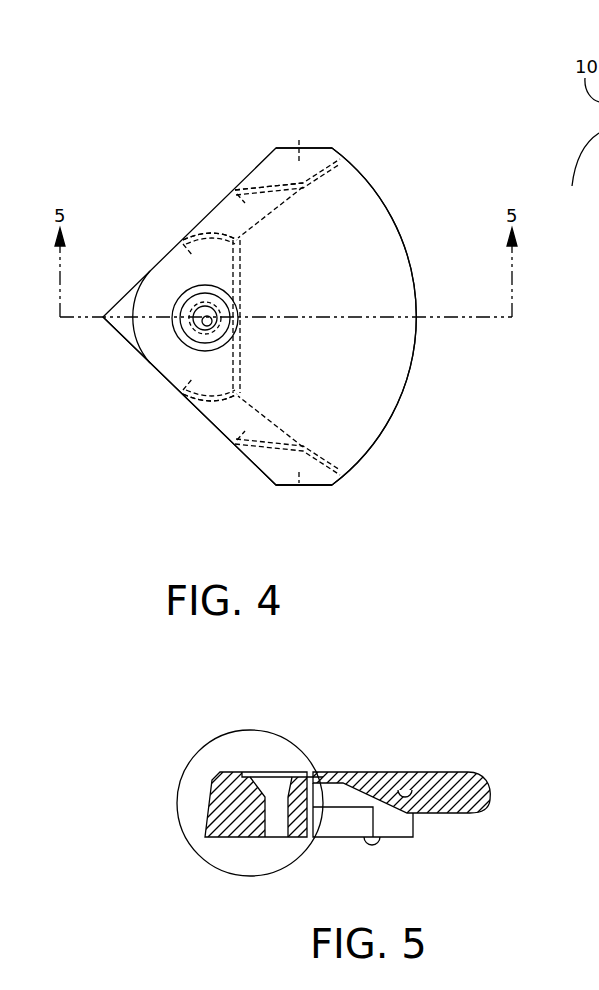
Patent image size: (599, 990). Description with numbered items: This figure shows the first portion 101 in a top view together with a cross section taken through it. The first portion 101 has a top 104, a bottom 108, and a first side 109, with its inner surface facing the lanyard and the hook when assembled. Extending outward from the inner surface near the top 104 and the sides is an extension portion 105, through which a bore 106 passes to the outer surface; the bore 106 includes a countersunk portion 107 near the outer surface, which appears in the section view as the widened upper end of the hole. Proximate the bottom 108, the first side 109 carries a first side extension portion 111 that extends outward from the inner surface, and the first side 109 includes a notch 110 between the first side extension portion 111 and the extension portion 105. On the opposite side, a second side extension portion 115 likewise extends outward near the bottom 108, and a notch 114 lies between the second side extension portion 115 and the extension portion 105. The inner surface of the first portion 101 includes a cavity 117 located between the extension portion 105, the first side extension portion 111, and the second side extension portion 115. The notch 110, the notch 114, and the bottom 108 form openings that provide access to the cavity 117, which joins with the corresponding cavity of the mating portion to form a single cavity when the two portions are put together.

In FIG. 4, the first portion 101 is at (576, 172).
In FIG. 4, the top 104 is at (141, 270).
In FIG. 4, the extension portion 105 is at (184, 236).
In FIG. 4, the bore 106 is at (210, 323).
In FIG. 4, the countersunk portion 107 is at (212, 300).
In FIG. 4, the bottom 108 is at (422, 242).
In FIG. 4, the first side 109 is at (215, 445).
In FIG. 4, the notch 110 is at (198, 412).
In FIG. 4, the first side extension portion 111 is at (303, 488).
In FIG. 4, the notch 114 is at (235, 188).
In FIG. 4, the second side extension portion 115 is at (303, 140).
In FIG. 5, the cavity 117 is at (418, 786).